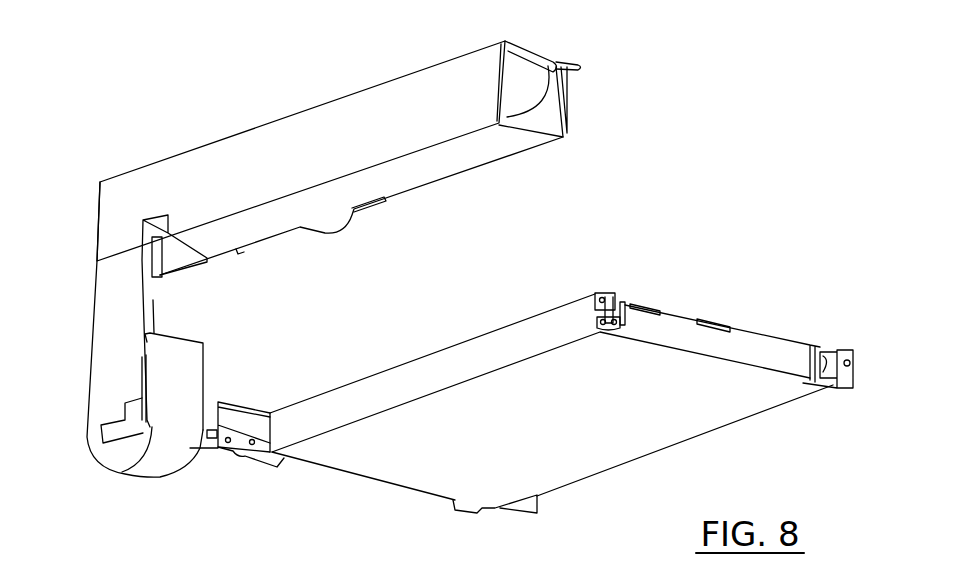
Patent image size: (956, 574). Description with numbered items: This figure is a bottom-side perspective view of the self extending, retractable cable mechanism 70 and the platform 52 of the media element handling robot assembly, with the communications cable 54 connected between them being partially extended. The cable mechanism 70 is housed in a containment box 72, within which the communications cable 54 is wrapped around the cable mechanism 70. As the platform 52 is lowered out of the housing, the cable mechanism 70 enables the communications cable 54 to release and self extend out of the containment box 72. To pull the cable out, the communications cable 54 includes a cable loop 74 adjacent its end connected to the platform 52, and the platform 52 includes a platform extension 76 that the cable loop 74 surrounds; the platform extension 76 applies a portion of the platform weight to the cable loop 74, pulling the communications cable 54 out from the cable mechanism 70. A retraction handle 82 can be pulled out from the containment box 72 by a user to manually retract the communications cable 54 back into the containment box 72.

The cable mechanism 70 is at (272, 158).
The containment box 72 is at (397, 107).
The retraction handle 82 is at (548, 63).
The communications cable 54 is at (530, 92).
The platform extension 76 is at (113, 427).
The cable loop 74 is at (163, 453).
The platform 52 is at (695, 412).